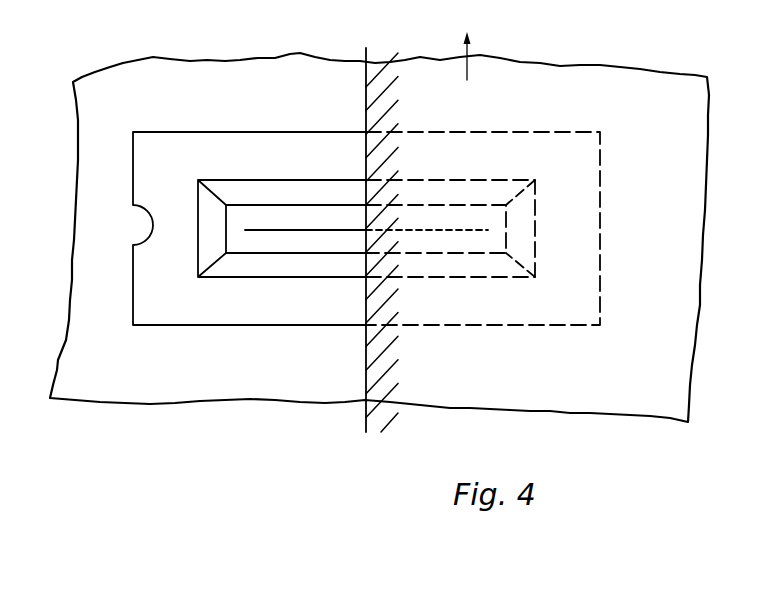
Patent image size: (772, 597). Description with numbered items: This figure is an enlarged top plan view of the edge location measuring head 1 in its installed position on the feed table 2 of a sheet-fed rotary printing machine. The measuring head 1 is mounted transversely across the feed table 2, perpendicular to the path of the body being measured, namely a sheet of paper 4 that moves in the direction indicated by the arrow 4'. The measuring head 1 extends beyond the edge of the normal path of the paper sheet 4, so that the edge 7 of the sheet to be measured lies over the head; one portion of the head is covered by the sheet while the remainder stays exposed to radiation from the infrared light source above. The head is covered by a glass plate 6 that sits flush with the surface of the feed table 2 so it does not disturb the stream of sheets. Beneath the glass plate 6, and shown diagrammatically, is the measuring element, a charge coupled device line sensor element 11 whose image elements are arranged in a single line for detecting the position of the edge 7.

The edge location measuring head 1 is at (194, 147).
The feed table 2 is at (58, 360).
The sheet of paper 4 is at (400, 229).
The arrow 4' is at (486, 52).
The glass plate 6 is at (269, 268).
The edge of the sheet 7 is at (363, 82).
The CCD line sensor element 11 is at (330, 233).